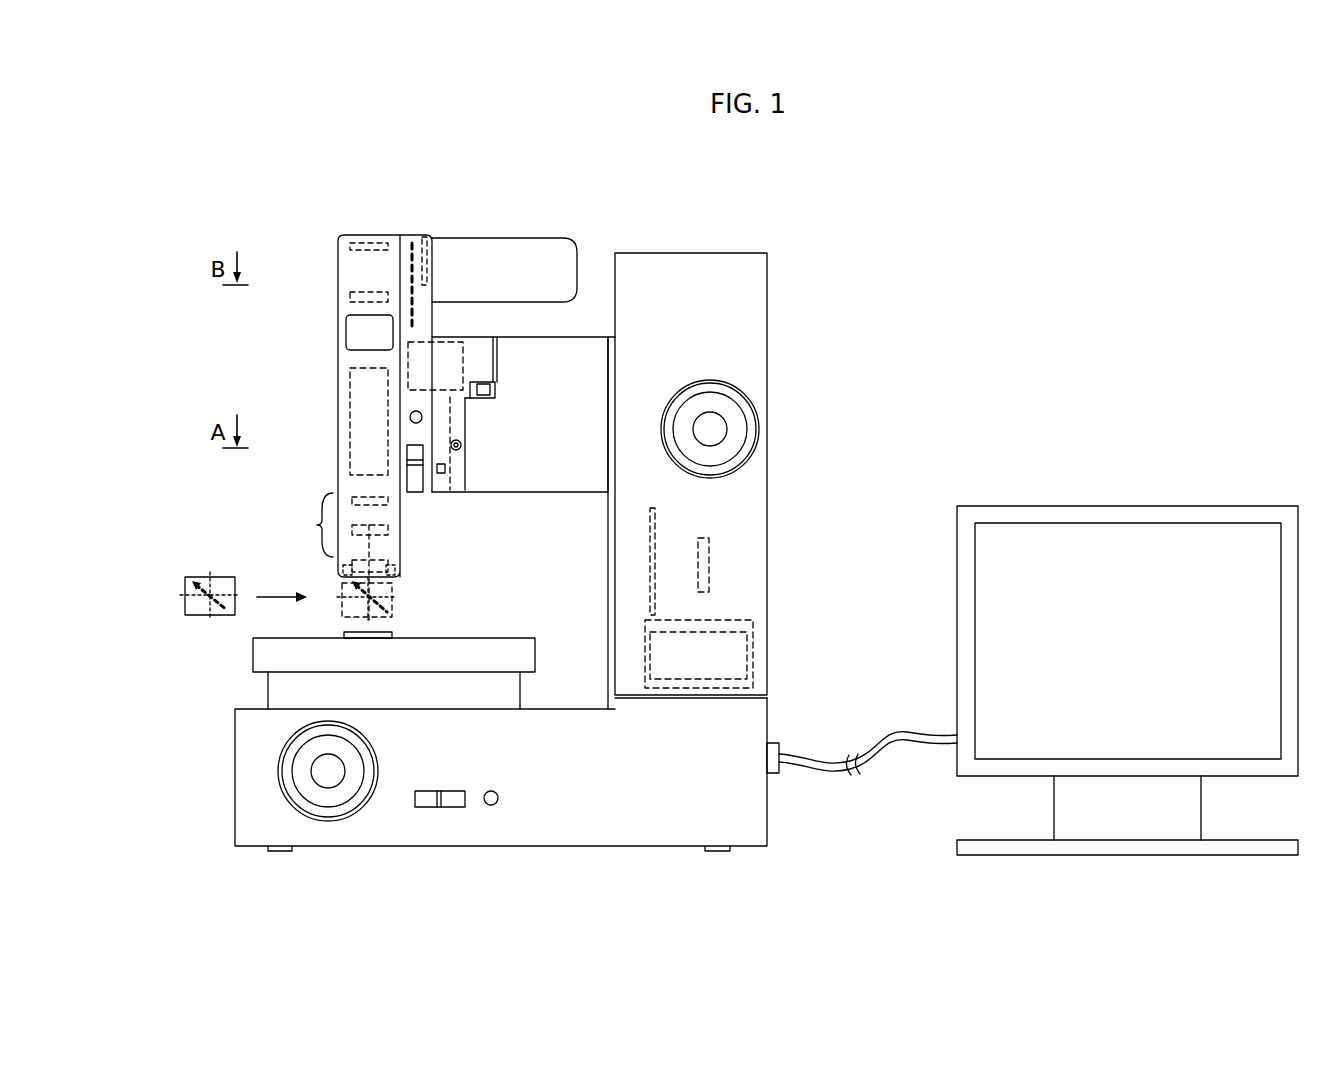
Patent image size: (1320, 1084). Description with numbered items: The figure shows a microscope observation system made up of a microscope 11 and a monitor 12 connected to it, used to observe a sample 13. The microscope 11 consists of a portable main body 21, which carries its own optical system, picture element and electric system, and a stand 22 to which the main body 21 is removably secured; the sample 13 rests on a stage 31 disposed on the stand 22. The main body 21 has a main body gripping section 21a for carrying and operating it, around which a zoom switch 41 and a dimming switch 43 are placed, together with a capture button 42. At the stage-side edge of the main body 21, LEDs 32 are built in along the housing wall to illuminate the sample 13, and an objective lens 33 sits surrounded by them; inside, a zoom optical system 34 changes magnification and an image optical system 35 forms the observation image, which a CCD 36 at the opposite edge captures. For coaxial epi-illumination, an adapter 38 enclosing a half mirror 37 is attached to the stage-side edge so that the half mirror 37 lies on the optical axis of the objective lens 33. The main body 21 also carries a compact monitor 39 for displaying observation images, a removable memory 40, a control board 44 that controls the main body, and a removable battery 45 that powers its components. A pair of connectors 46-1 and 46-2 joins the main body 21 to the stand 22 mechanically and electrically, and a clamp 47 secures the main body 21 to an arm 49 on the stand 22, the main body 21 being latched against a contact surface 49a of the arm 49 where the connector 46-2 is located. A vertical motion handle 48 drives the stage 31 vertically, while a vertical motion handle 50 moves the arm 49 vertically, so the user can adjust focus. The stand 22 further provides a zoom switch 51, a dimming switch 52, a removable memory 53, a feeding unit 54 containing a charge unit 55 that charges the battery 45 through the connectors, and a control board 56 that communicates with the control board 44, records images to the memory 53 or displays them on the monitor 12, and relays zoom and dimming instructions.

The microscope 11 is at (224, 692).
The monitor 12 is at (1137, 506).
The sample 13 is at (392, 633).
The main body 21 is at (338, 252).
The main body gripping section 21a is at (577, 250).
The stand 22 is at (767, 327).
The stage 31 is at (253, 651).
The LEDs 32 is at (400, 570).
The objective lens 33 is at (317, 526).
The zoom optical system 34 is at (350, 382).
The image optical system 35 is at (350, 296).
The CCD 36 is at (372, 247).
The half mirror 37 is at (187, 590).
The adapter 38 is at (210, 577).
The compact monitor 39 is at (346, 333).
The memory 40 is at (424, 237).
The zoom switch 41 is at (416, 492).
The capture button 42 is at (441, 473).
The dimming switch 43 is at (410, 417).
The control board 44 is at (412, 243).
The battery 45 is at (448, 342).
The connector 46-1 is at (488, 383).
The connector 46-2 is at (495, 393).
The clamp 47 is at (458, 450).
The vertical motion handle 48 is at (280, 775).
The arm 49 is at (583, 462).
The contact surface 49a is at (468, 400).
The vertical motion handle 50 is at (752, 398).
The zoom switch 51 is at (428, 807).
The dimming switch 52 is at (491, 805).
The memory 53 is at (709, 565).
The feeding unit 54 is at (753, 633).
The charge unit 55 is at (735, 652).
The control board 56 is at (655, 523).